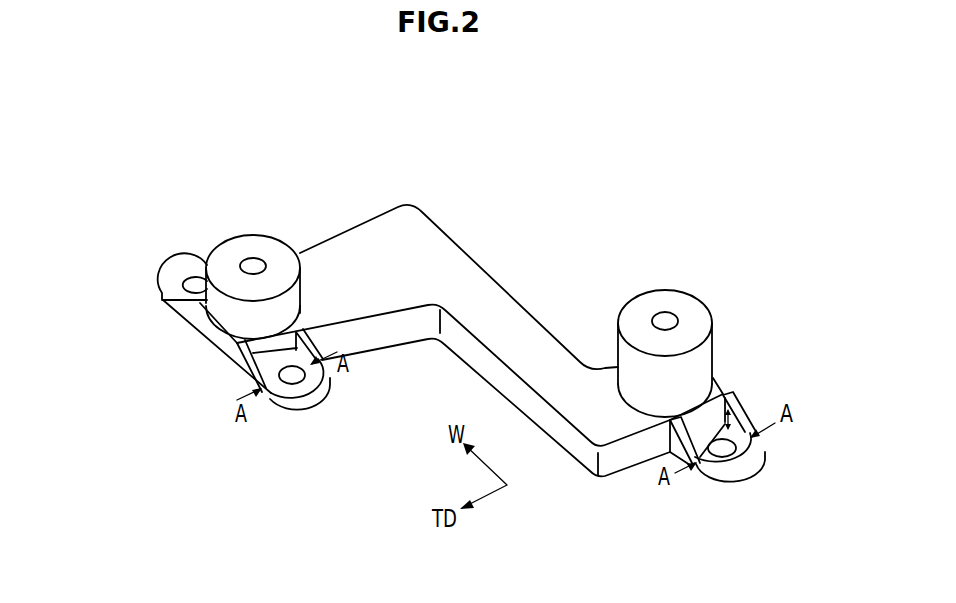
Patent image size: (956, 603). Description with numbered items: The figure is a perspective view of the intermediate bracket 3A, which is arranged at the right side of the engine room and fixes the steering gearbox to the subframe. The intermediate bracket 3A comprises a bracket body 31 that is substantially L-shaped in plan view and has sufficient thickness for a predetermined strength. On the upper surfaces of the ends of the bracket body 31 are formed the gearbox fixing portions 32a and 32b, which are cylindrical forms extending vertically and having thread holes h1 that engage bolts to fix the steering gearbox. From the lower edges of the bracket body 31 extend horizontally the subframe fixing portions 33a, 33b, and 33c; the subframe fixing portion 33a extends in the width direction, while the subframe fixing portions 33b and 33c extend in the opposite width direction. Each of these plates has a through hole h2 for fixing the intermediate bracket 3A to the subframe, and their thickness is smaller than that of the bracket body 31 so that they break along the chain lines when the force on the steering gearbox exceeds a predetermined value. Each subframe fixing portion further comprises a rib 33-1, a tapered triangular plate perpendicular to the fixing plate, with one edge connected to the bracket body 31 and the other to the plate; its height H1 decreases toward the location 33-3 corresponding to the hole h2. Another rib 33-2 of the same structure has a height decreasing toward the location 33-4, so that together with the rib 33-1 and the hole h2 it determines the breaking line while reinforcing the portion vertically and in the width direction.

The intermediate bracket 3A is at (543, 155).
The bracket body 31 is at (423, 233).
The gearbox fixing portion 32a is at (275, 250).
The gearbox fixing portion 32b is at (697, 305).
The subframe fixing portion 33a is at (182, 295).
The subframe fixing portion 33b is at (288, 392).
The subframe fixing portion 33c is at (712, 466).
The rib 33-1 is at (673, 437).
The rib 33-2 is at (735, 393).
The location corresponding to the hole 33-3 is at (690, 474).
The location corresponding to the hole 33-4 is at (760, 440).
The thread hole h1 is at (252, 258).
The through hole h2 is at (198, 278).
The height of the rib H1 is at (733, 415).